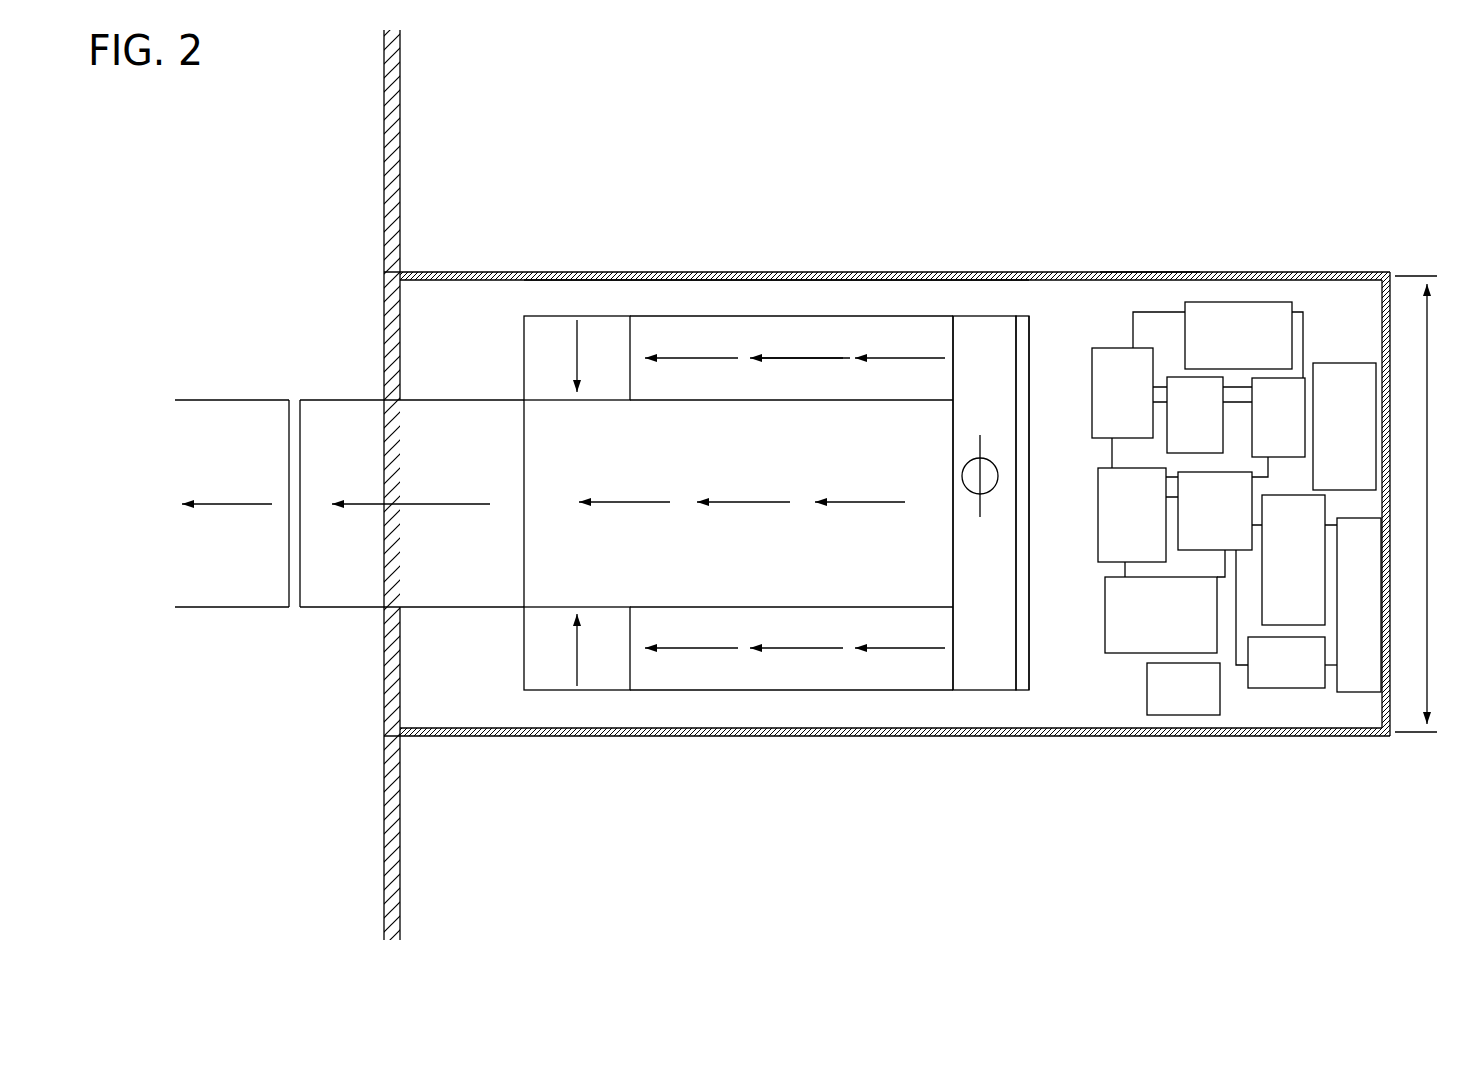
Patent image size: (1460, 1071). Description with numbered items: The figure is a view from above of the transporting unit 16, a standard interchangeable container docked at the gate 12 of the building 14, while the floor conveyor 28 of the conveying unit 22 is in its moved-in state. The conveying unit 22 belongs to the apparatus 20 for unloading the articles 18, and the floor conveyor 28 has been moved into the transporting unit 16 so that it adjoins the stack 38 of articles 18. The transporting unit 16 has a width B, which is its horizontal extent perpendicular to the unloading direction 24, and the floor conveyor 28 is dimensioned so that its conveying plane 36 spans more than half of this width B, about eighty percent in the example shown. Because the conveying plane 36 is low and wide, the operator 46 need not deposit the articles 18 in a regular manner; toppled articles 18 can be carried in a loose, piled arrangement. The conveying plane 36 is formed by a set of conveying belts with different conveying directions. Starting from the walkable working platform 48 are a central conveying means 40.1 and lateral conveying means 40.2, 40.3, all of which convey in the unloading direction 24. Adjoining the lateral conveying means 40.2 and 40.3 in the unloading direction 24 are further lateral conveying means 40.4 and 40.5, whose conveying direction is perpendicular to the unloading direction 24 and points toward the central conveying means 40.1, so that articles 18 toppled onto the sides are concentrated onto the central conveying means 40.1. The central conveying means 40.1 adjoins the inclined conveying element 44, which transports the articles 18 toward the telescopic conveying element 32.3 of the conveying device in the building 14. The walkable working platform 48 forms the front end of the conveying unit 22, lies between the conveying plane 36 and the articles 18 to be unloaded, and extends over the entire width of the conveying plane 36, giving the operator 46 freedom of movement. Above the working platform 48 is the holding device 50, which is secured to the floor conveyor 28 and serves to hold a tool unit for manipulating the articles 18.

The gate 12 is at (413, 267).
The building 14 is at (400, 73).
The transporting unit 16 is at (1148, 272).
The articles 18 is at (1232, 318).
The apparatus 20 is at (1048, 351).
The conveying unit 22 is at (568, 308).
The unloading direction 24 is at (423, 502).
The floor conveyor 28 is at (858, 300).
The conveying element 32.3 is at (227, 612).
The conveying plane 36 is at (800, 338).
The stack of articles 38 is at (1324, 307).
The central conveying means 40.1 is at (897, 575).
The lateral conveying means 40.2 is at (697, 328).
The lateral conveying means 40.3 is at (808, 672).
The further lateral conveying means 40.4 is at (583, 330).
The further lateral conveying means 40.5 is at (602, 672).
The inclined conveying element 44 is at (345, 612).
The operator 46 is at (968, 478).
The walkable working platform 48 is at (990, 668).
The holding device 50 is at (1020, 325).
The width B is at (1421, 504).